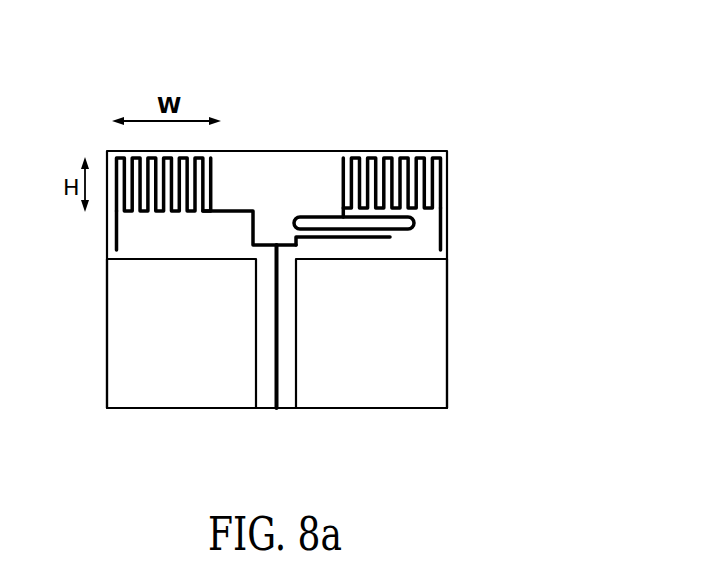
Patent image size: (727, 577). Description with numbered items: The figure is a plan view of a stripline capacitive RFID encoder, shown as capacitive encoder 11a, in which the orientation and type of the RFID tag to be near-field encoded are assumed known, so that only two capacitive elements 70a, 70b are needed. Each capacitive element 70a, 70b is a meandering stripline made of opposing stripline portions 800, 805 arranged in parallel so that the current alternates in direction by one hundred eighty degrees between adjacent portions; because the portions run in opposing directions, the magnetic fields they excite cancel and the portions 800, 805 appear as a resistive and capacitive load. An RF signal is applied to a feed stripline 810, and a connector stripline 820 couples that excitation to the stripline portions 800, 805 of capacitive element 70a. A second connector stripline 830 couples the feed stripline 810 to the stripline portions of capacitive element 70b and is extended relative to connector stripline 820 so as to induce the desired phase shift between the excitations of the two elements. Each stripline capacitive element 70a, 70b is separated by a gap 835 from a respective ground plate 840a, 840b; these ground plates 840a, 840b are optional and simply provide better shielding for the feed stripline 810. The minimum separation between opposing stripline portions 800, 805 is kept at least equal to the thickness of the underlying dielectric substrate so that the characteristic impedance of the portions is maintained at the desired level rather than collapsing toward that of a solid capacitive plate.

The capacitive encoder 11a is at (456, 66).
The capacitive element 70a is at (141, 151).
The capacitive element 70b is at (400, 151).
The stripline portion 800 is at (320, 151).
The stripline portion 805 is at (207, 214).
The feed stripline 810 is at (282, 250).
The connector stripline 820 is at (241, 208).
The connector stripline 830 is at (390, 240).
The gap 835 is at (107, 250).
The ground plate 840a is at (136, 410).
The ground plate 840b is at (425, 410).